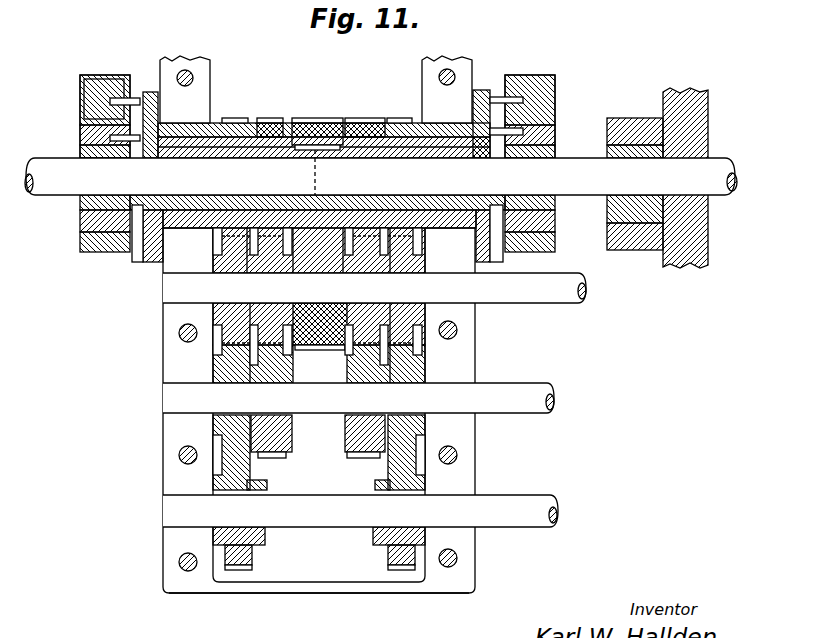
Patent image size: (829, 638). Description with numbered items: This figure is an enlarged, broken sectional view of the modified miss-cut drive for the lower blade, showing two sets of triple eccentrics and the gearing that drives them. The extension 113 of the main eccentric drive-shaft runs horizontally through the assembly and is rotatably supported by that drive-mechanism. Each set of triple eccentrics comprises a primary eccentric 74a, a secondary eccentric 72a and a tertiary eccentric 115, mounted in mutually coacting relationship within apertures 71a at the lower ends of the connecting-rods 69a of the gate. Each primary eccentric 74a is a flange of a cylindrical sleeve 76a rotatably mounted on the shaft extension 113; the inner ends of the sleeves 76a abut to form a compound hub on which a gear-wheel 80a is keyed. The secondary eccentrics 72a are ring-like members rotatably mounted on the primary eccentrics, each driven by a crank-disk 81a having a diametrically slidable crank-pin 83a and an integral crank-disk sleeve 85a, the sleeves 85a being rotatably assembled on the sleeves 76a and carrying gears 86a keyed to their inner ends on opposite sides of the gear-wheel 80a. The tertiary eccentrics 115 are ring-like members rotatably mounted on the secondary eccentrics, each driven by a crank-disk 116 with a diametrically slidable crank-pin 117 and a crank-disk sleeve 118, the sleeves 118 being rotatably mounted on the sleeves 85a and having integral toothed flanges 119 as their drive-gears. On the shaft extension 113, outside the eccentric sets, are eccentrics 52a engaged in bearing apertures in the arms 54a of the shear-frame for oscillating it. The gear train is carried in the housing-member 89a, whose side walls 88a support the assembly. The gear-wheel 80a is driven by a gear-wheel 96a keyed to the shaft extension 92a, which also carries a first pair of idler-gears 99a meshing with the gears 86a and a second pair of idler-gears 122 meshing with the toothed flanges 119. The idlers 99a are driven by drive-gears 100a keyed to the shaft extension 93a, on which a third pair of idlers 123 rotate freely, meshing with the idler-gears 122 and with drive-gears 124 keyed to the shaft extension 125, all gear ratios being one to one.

The eccentrics 52a is at (615, 213).
The arms of the shear-frame 54a is at (630, 252).
The connecting-rods of the gate 69a is at (565, 68).
The apertures 71a is at (91, 95).
The secondary eccentrics 72a is at (568, 128).
The primary eccentrics 74a is at (568, 145).
The cylindrical sleeves 76a is at (174, 150).
The gear-wheel 80a is at (322, 118).
The crank-disk 81a is at (565, 240).
The crank-pin 83a is at (516, 170).
The crank-disk sleeve 85a is at (201, 143).
The gears 86a is at (268, 118).
The side walls of the housing-member 88a is at (492, 462).
The housing-member 89a is at (302, 593).
The extension of the secondary drive-shaft 92a is at (527, 305).
The extension of the secondary drive-shaft 93a is at (517, 413).
The gear-wheel 96a is at (318, 345).
The first pair of idler-gears 99a is at (367, 298).
The first pair of drive-gears 100a is at (278, 455).
The extension of the main eccentric drive-shaft 113 is at (32, 197).
The tertiary eccentrics 115 is at (80, 104).
The crank-disk 116 is at (150, 92).
The crank-pin 117 is at (121, 97).
The crank-disk sleeve 118 is at (193, 123).
The toothed flanges 119 is at (236, 118).
The second pair of idler-gears 122 is at (222, 245).
The third pair of idlers 123 is at (222, 356).
The drive-gears 124 is at (250, 555).
The extension of the secondary drive-shaft 125 is at (522, 527).